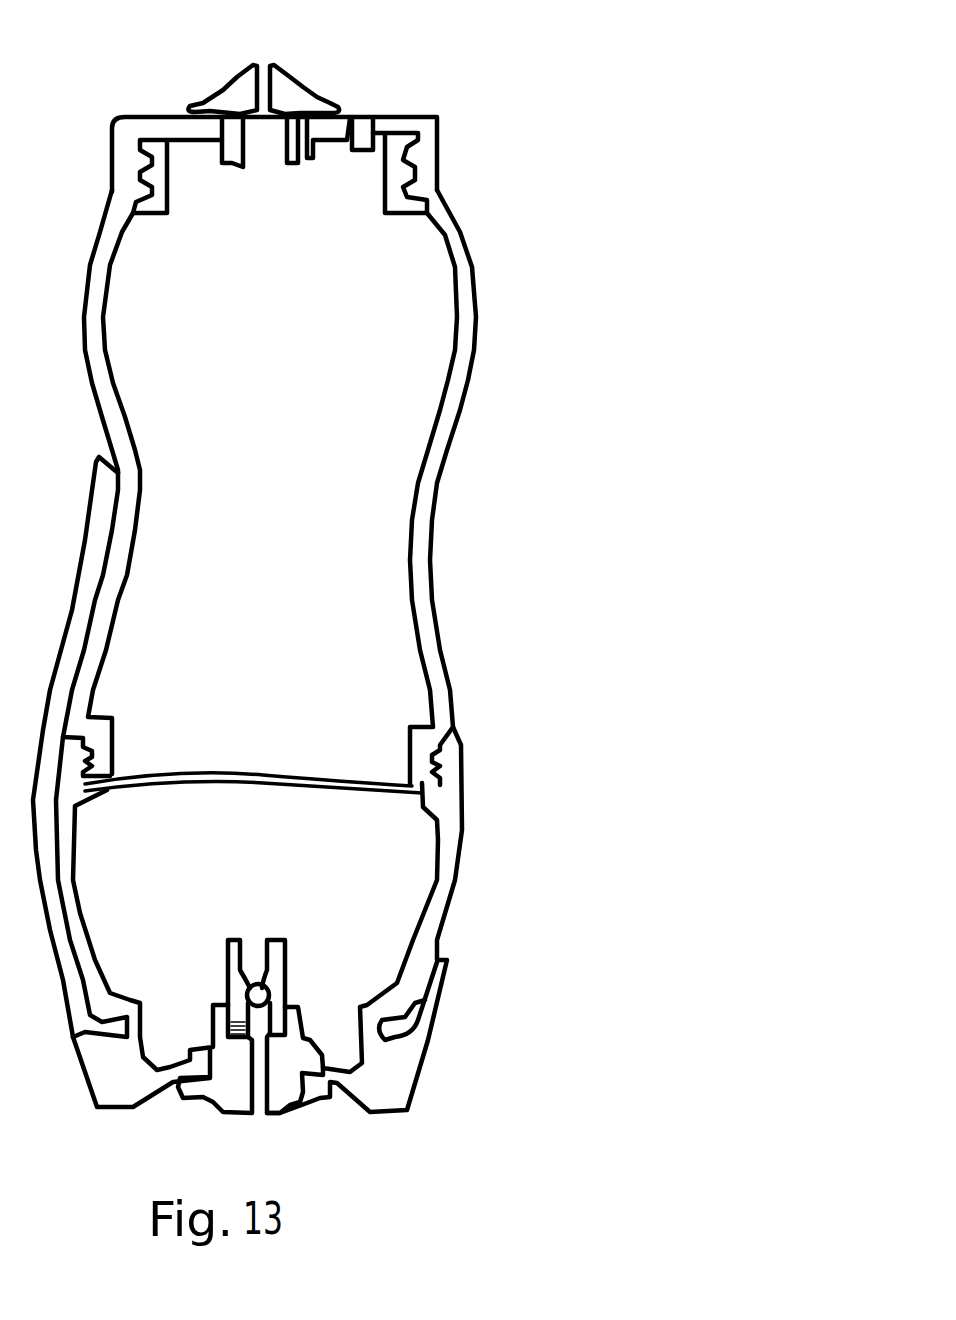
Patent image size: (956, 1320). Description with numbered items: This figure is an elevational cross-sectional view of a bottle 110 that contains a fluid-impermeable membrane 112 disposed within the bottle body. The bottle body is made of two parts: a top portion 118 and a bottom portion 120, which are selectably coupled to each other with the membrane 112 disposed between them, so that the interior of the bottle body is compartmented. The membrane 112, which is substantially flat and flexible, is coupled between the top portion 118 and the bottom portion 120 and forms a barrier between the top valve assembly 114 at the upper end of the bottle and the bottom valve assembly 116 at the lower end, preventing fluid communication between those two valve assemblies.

The bottle 110 is at (668, 170).
The fluid-impermeable membrane 112 is at (263, 790).
The top valve assembly 114 is at (346, 77).
The bottom valve assembly 116 is at (152, 1112).
The top portion of the bottle body 118 is at (438, 457).
The bottom portion of the bottle body 120 is at (450, 892).